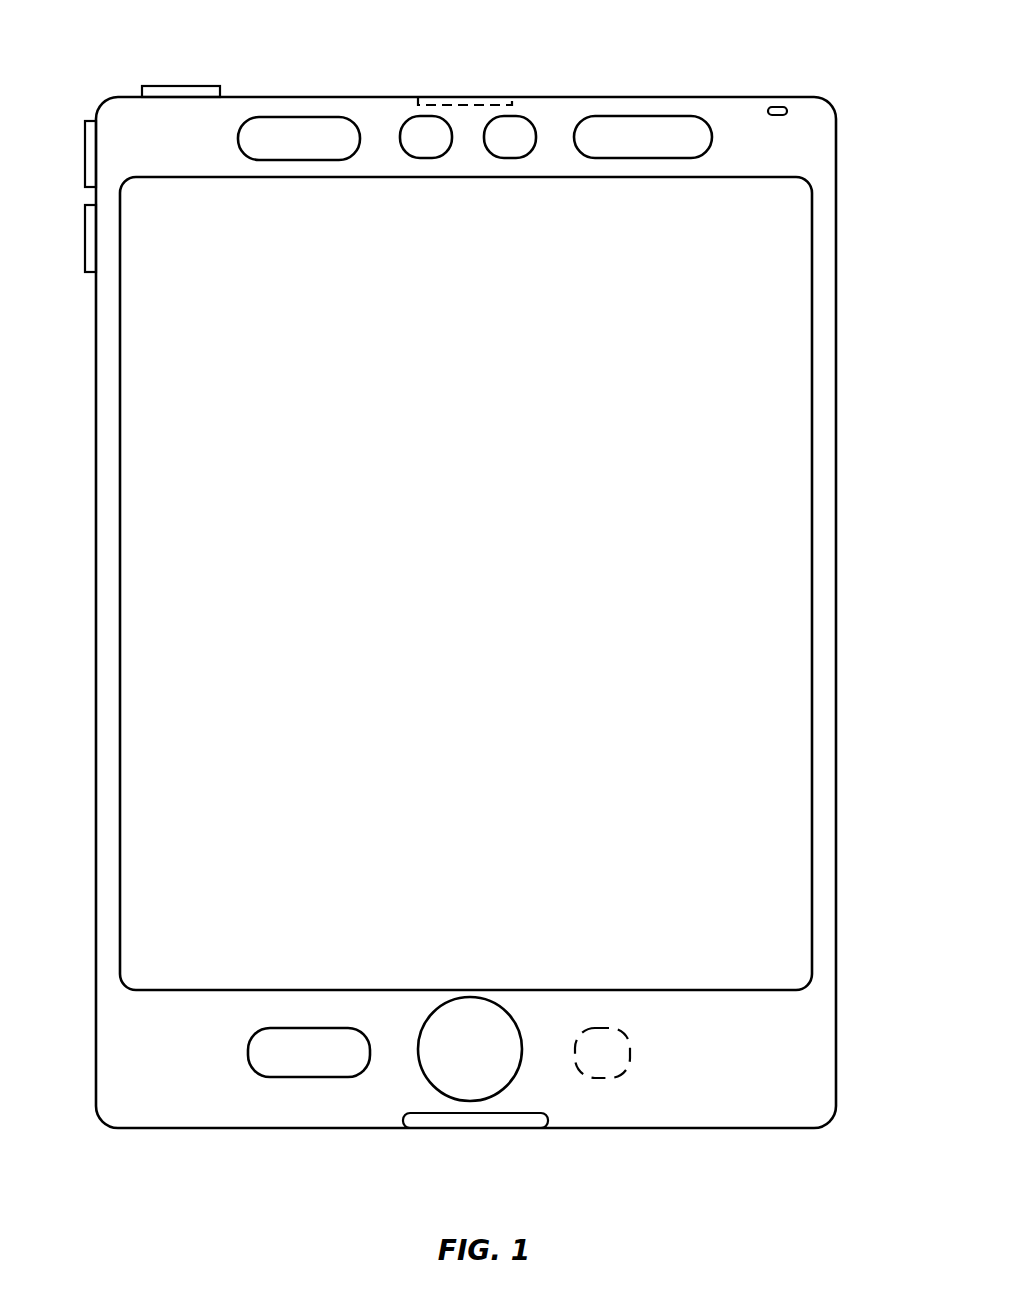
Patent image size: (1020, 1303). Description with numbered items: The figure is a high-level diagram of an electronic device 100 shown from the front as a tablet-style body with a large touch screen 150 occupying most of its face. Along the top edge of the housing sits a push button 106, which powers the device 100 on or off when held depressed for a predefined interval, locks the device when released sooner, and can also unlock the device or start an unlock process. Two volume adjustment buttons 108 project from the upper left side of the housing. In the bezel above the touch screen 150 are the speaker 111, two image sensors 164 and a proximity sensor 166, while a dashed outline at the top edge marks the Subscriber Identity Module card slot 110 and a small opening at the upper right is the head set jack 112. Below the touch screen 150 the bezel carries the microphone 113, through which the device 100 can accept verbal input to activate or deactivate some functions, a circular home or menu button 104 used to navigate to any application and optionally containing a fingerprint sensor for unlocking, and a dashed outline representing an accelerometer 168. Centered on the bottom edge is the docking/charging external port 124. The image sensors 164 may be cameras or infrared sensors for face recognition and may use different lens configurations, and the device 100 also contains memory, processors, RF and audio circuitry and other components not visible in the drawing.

The electronic device 100 is at (868, 98).
The menu button 104 is at (470, 1049).
The push button 106 is at (178, 86).
The volume adjustment buttons 108 is at (85, 150).
The Subscriber Identity Module (SIM) card slot 110 is at (466, 97).
The speaker 111 is at (285, 148).
The head set jack 112 is at (777, 107).
The microphone 113 is at (295, 1062).
The docking/charging external port 124 is at (478, 1128).
The touch screen 150 is at (812, 476).
The image sensors 164 is at (412, 147).
The proximity sensors 166 is at (627, 147).
The accelerometers 168 is at (588, 1064).